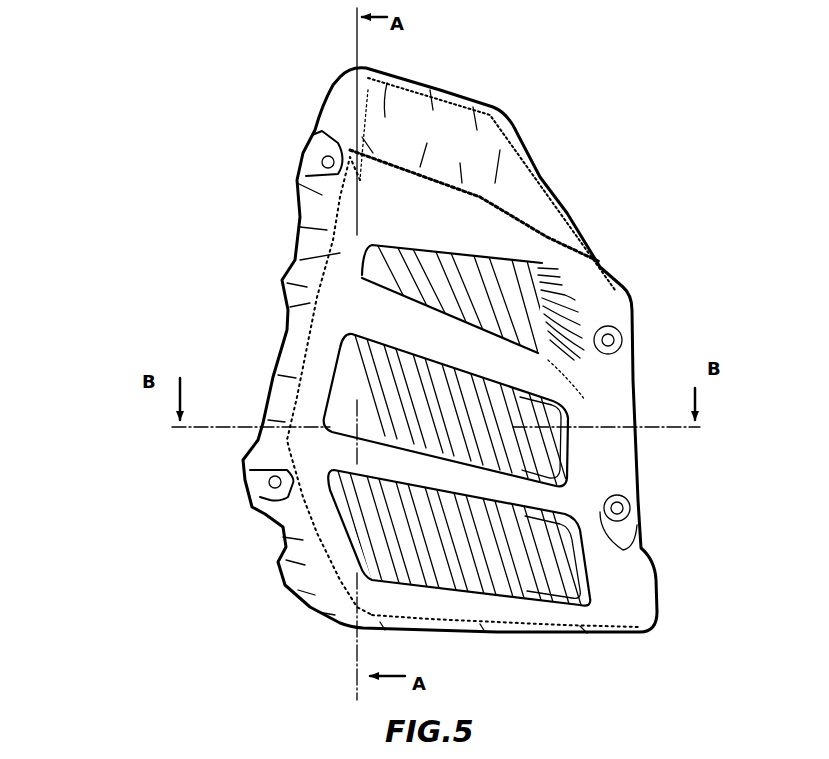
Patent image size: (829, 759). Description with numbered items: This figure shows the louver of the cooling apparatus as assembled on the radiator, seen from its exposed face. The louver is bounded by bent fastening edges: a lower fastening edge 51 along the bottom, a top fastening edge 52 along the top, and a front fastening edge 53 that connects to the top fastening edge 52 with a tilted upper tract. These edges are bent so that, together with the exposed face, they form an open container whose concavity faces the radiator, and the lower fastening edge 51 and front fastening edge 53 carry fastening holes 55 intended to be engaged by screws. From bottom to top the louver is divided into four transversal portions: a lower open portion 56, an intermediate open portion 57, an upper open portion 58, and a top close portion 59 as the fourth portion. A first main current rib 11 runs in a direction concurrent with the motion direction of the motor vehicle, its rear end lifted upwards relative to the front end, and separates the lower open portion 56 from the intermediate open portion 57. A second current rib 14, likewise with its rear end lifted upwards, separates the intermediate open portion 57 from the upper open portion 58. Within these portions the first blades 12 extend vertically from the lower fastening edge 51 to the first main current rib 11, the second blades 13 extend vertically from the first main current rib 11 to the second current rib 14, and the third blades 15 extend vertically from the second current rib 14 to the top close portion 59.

The first main current rib 11 is at (533, 493).
The first blades 12 is at (370, 517).
The second blades 13 is at (402, 375).
The second current rib 14 is at (482, 348).
The third blades 15 is at (488, 300).
The lower fastening edge 51 is at (484, 636).
The top fastening edge 52 is at (458, 86).
The front fastening edge 53 is at (643, 505).
The fastening holes 55 is at (318, 105).
The lower open portion 56 is at (390, 537).
The intermediate open portion 57 is at (338, 362).
The upper open portion 58 is at (468, 270).
The top close portion 59 is at (457, 153).